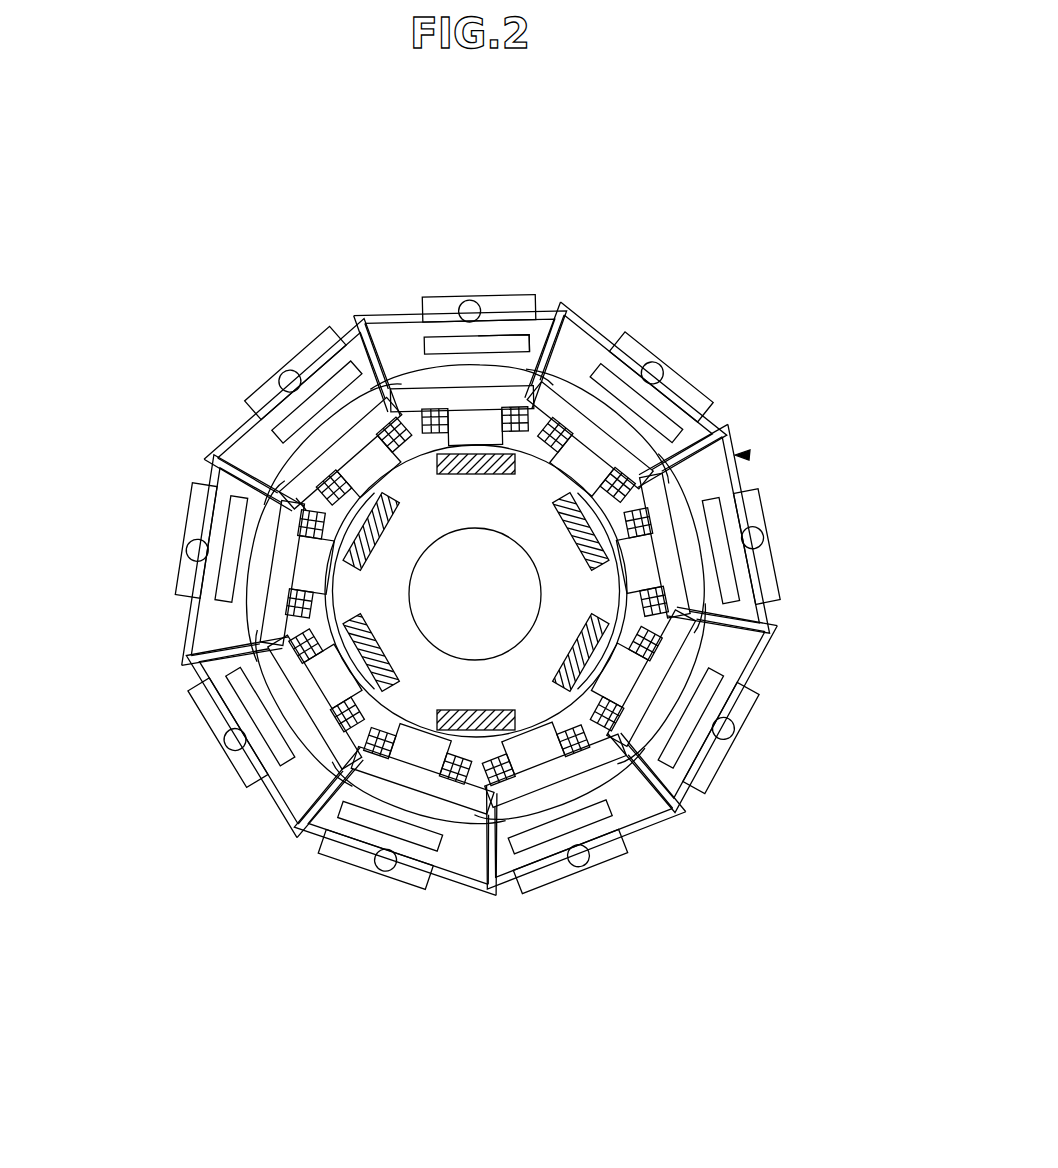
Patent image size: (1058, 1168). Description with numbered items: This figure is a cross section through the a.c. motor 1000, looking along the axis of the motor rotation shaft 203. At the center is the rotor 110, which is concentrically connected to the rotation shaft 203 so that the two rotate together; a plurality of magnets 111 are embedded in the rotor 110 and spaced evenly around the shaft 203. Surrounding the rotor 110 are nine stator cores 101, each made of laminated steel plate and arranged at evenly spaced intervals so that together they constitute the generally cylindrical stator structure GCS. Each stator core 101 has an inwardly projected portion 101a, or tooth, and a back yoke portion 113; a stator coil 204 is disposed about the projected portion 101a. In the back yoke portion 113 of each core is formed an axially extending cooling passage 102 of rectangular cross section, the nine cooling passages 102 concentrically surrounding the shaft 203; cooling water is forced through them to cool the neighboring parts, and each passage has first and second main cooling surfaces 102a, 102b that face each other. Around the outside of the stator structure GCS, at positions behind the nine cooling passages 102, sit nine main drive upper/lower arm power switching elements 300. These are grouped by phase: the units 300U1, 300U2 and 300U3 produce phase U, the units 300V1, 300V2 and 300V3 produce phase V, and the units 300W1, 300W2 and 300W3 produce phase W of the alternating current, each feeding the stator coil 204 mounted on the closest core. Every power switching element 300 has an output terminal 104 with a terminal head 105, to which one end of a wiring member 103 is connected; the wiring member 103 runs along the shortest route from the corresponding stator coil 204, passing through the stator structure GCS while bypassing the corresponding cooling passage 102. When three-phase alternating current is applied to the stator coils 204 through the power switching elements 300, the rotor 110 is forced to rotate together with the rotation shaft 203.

The electric motor 1000 is at (792, 119).
The rotor 110 is at (345, 625).
The motor rotation shaft 203 is at (473, 647).
The power switching element 300 is at (473, 582).
The power switching element unit U1 300U1 is at (523, 300).
The power switching element unit V1 300V1 is at (710, 400).
The power switching element unit W1 300W1 is at (777, 567).
The power switching element unit U2 300U2 is at (745, 728).
The power switching element unit V2 300V2 is at (612, 870).
The power switching element unit W2 300W2 is at (398, 885).
The power switching element unit U3 300U3 is at (208, 732).
The power switching element unit V3 300V3 is at (178, 571).
The power switching element unit W3 300W3 is at (258, 384).
The stator core 101 is at (480, 413).
The projected portion 101a is at (466, 437).
The cooling passage 102 is at (440, 340).
The first main cooling surface 102a is at (493, 350).
The second main cooling surface 102b is at (437, 340).
The wiring member 103 is at (560, 313).
The output terminal 104 is at (619, 278).
The terminal head 105 is at (462, 297).
The back yoke portion 113 is at (590, 337).
The magnet 111 is at (300, 503).
The stator coil 204 is at (392, 430).
The cylindrical stator structure GCS is at (750, 456).